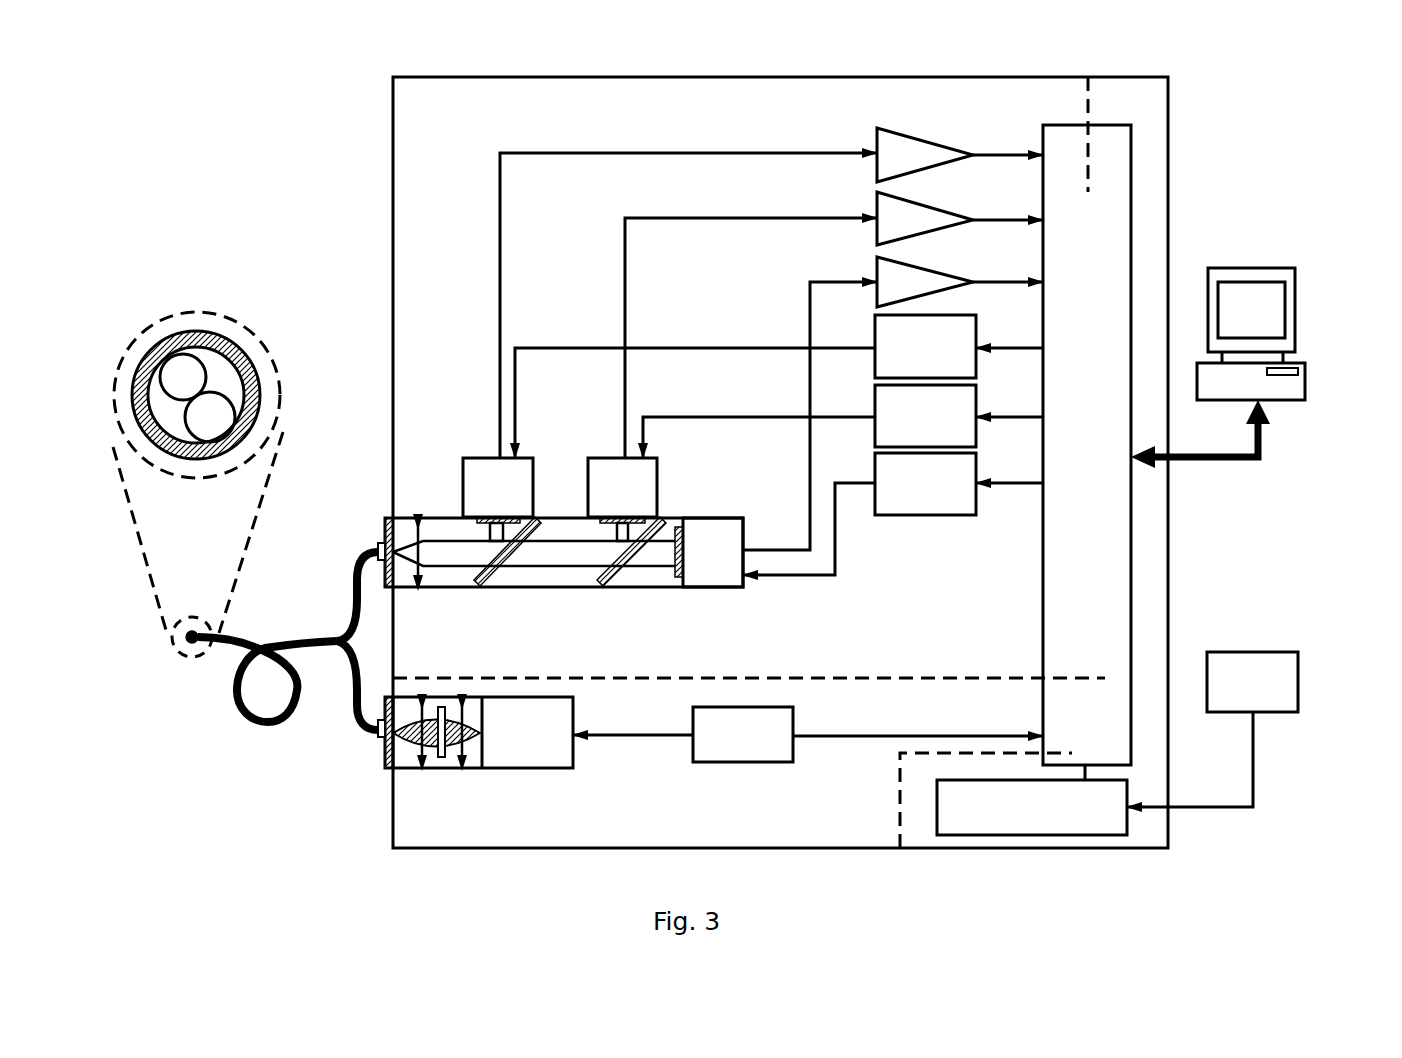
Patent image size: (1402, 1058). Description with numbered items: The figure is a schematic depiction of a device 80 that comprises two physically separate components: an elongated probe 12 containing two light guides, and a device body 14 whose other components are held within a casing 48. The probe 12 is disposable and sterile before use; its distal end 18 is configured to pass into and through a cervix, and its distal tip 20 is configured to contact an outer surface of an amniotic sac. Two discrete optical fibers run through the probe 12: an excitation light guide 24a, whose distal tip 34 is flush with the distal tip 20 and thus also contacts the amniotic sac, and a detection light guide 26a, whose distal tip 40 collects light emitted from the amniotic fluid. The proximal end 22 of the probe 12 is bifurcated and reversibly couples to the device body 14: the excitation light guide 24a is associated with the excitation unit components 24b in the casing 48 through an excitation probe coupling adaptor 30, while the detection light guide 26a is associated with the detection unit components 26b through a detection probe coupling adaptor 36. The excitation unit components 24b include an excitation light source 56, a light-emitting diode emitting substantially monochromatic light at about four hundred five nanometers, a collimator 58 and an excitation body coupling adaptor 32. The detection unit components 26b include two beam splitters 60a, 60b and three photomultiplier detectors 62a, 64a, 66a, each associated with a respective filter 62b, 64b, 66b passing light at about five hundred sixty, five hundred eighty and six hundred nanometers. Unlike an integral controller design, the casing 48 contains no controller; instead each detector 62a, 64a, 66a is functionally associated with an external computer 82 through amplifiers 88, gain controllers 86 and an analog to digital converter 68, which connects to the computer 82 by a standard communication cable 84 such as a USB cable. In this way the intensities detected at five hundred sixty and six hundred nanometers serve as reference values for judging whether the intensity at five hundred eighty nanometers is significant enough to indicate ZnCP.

The probe 12 is at (288, 675).
The device body 14 is at (706, 462).
The distal end 18 is at (185, 657).
The distal tip 20 is at (227, 628).
The proximal end 22 is at (310, 648).
The excitation light guide 24a is at (208, 358).
The components of excitation unit 24b is at (868, 727).
The detection light guide 26a is at (228, 399).
The components of detection unit 26b is at (749, 650).
The excitation probe coupling adaptor 30 is at (378, 743).
The excitation body coupling adaptor 32 is at (390, 777).
The distal tip of excitation light guide 34 is at (182, 360).
The detection probe coupling adaptor 36 is at (380, 542).
The distal tip of detection light guide 40 is at (210, 428).
The casing 48 is at (393, 232).
The excitation light source 56 is at (530, 767).
The collimator 58 is at (430, 773).
The beam splitter 60a is at (498, 588).
The beam splitter 60b is at (625, 588).
The detector 62a is at (485, 465).
The filter 62b is at (447, 519).
The detector 64a is at (603, 465).
The filter 64b is at (577, 517).
The detector 66a is at (735, 535).
The filter 66b is at (678, 525).
The analog to digital converter 68 is at (1110, 187).
The device 80 is at (190, 416).
The external computer 82 is at (1305, 393).
The communication cable 84 is at (1207, 463).
The gain controllers 86 is at (779, 445).
The amplifiers 88 is at (960, 217).